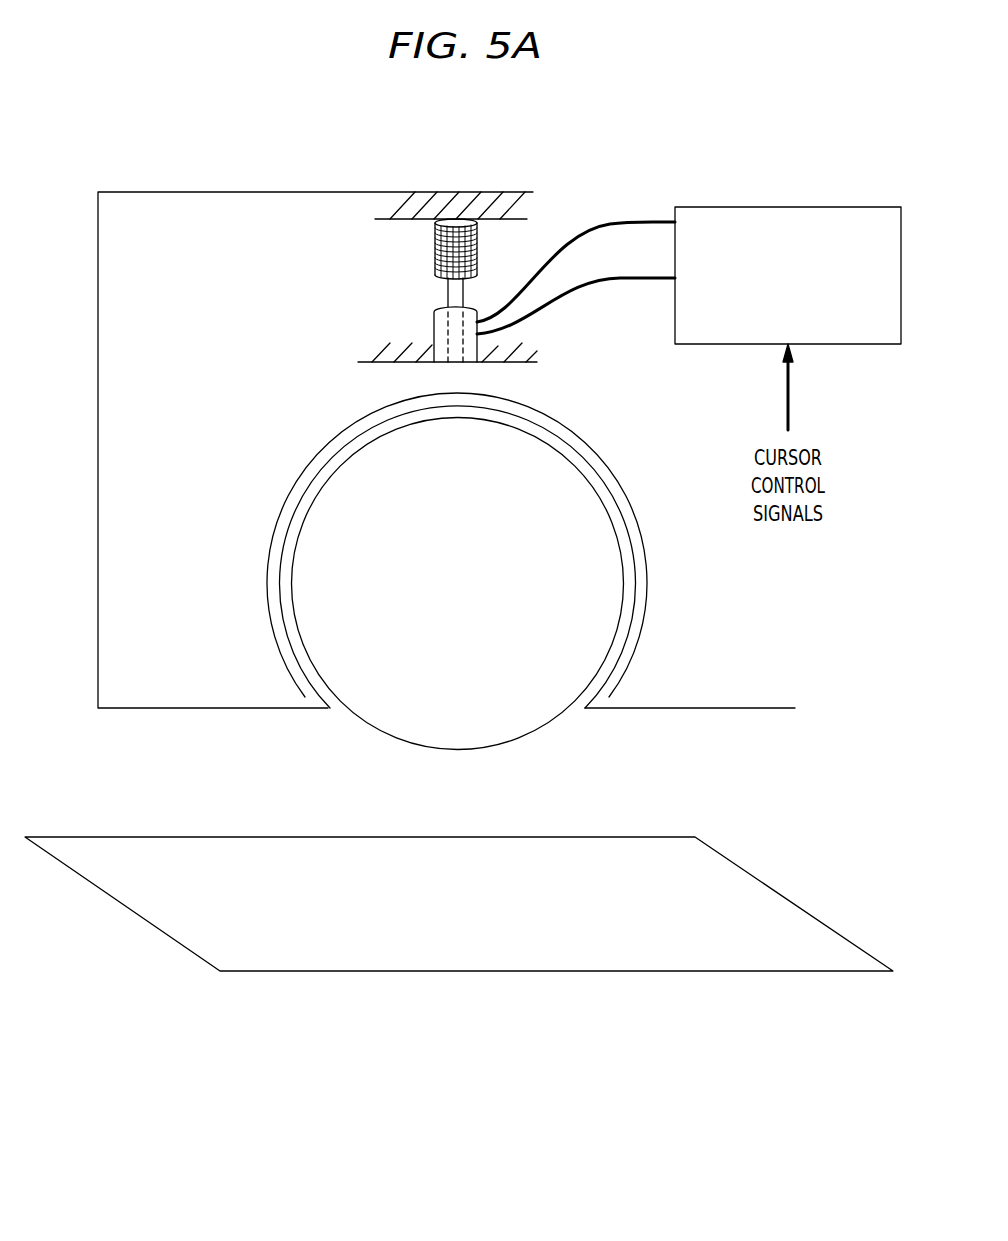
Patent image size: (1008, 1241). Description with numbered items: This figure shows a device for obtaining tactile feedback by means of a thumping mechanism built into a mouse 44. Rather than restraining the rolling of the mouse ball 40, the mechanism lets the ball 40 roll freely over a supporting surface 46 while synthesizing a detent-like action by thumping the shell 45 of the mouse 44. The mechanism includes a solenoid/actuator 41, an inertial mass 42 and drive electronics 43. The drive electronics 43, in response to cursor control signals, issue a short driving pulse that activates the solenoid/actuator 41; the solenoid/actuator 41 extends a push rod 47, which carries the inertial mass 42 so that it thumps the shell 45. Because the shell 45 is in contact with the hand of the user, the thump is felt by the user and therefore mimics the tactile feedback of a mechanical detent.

The trackball 40 is at (537, 730).
The solenoid/actuator 41 is at (434, 326).
The inertial mass 42 is at (434, 240).
The drive electronics 43 is at (869, 334).
The mouse 44 is at (247, 191).
The shell 45 is at (465, 191).
The mouse pad surface 46 is at (557, 972).
The push rod 47 is at (447, 295).